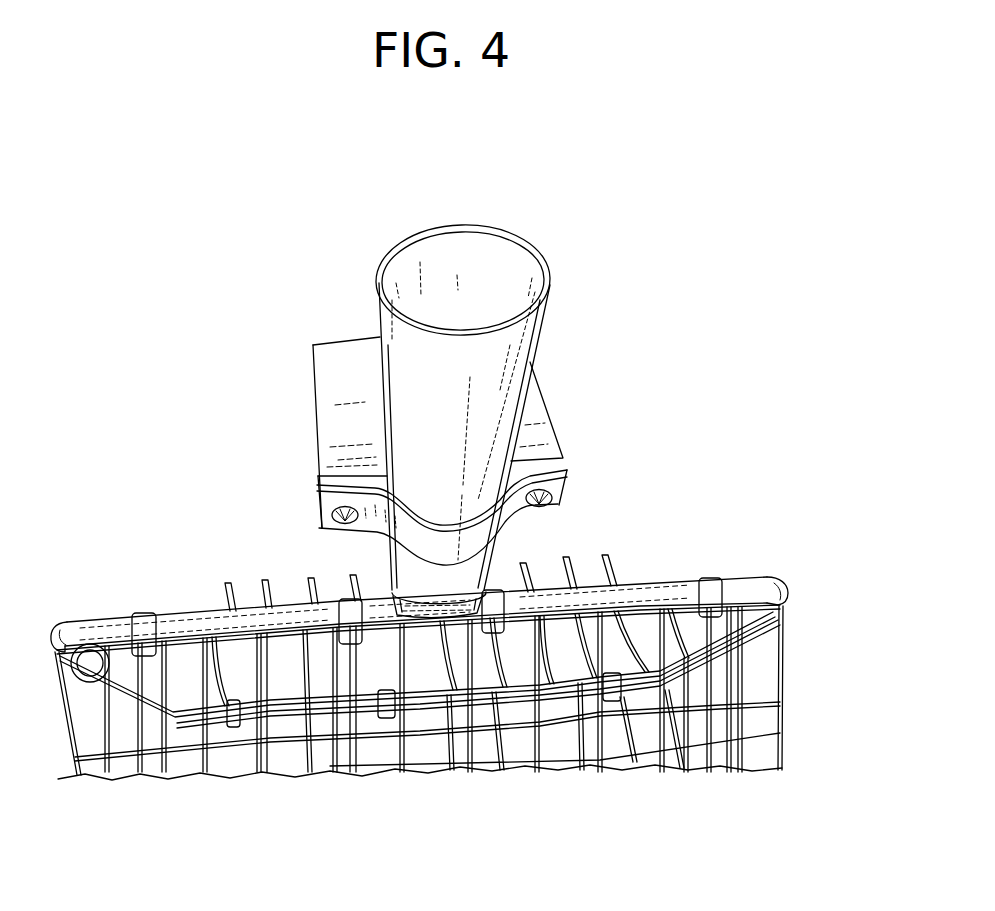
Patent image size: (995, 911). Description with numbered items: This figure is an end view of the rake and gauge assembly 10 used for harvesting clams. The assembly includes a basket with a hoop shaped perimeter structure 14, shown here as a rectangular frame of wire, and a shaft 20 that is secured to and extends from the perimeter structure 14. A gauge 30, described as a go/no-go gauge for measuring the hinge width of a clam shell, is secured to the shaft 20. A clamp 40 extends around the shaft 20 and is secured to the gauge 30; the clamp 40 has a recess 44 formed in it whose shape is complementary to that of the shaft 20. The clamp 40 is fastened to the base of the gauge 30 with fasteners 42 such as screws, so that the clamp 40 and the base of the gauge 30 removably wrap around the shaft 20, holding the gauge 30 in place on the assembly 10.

The rake and gauge assembly 10 is at (608, 229).
The hoop shaped perimeter structure 14 is at (780, 584).
The shaft 20 is at (378, 326).
The gauge 30 is at (340, 431).
The clamp 40 is at (556, 484).
The fasteners 42 is at (343, 525).
The recess 44 is at (473, 538).